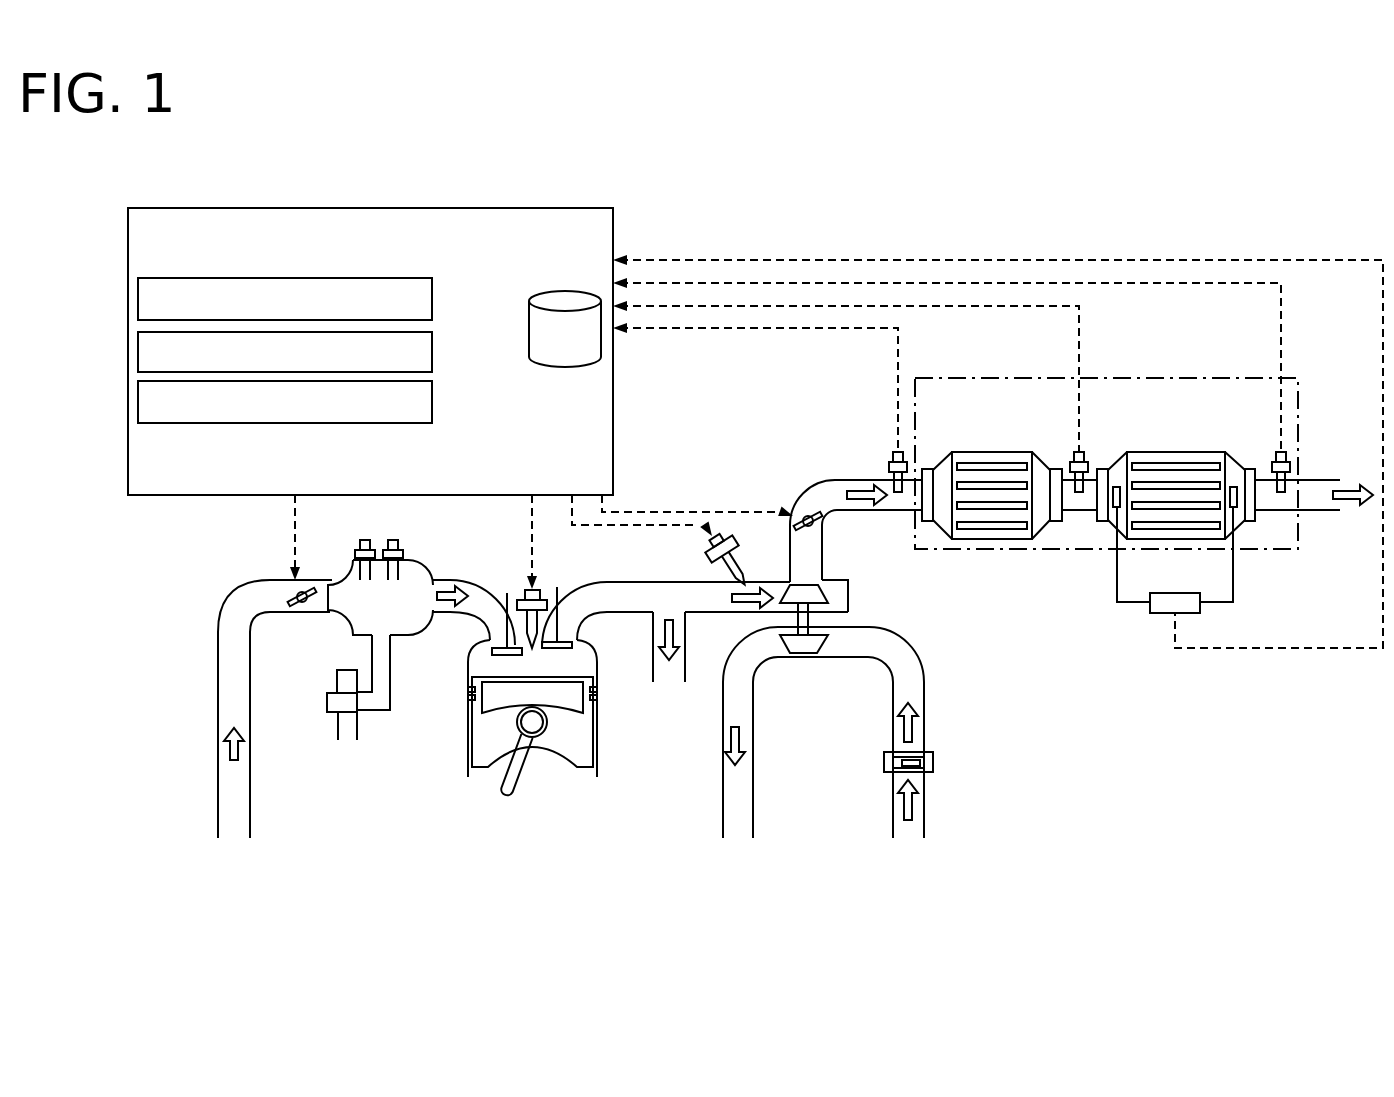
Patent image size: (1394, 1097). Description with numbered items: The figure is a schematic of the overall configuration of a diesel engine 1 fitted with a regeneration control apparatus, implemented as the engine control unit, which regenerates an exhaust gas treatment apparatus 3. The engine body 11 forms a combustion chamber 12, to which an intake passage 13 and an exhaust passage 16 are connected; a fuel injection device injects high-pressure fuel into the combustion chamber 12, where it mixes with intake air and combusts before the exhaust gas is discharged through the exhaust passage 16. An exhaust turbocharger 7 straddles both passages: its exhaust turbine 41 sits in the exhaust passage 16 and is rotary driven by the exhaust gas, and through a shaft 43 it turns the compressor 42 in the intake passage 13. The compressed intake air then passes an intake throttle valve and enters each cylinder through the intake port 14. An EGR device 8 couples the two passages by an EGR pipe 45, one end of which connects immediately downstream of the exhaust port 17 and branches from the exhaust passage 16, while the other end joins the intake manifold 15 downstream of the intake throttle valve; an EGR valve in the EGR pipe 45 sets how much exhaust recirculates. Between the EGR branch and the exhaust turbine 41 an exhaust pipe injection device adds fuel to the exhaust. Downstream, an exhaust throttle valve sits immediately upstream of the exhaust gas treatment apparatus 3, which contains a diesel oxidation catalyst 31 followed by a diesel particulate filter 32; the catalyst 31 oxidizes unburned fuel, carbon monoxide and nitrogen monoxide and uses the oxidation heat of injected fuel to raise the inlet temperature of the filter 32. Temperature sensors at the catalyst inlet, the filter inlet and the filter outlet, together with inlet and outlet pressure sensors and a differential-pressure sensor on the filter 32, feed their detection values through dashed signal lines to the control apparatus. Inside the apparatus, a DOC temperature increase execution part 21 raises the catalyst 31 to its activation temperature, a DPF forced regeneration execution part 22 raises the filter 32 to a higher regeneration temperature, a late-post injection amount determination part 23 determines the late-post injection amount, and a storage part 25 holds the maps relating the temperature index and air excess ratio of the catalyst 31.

The diesel engine 1 is at (1085, 802).
The exhaust gas treatment apparatus 3 is at (1144, 480).
The exhaust turbocharger 7 is at (851, 629).
The EGR device 8 is at (348, 713).
The engine body 11 is at (519, 667).
The combustion chamber 12 is at (540, 662).
The intake passage 13 is at (218, 690).
The intake port 14 is at (465, 612).
The intake manifold 15 is at (408, 637).
The exhaust passage 16 is at (830, 470).
The exhaust port 17 is at (585, 625).
The DOC temperature increase execution part 21 is at (434, 300).
The DPF forced regeneration execution part 22 is at (434, 357).
The late-post injection amount determination part 23 is at (434, 405).
The storage part 25 is at (567, 287).
The diesel oxidation catalyst (DOC) 31 is at (970, 527).
The diesel particulate filter (DPF) 32 is at (1140, 522).
The exhaust turbine 41 is at (803, 580).
The compressor 42 is at (808, 653).
The shaft 43 is at (813, 617).
The EGR pipe 45 is at (685, 655).